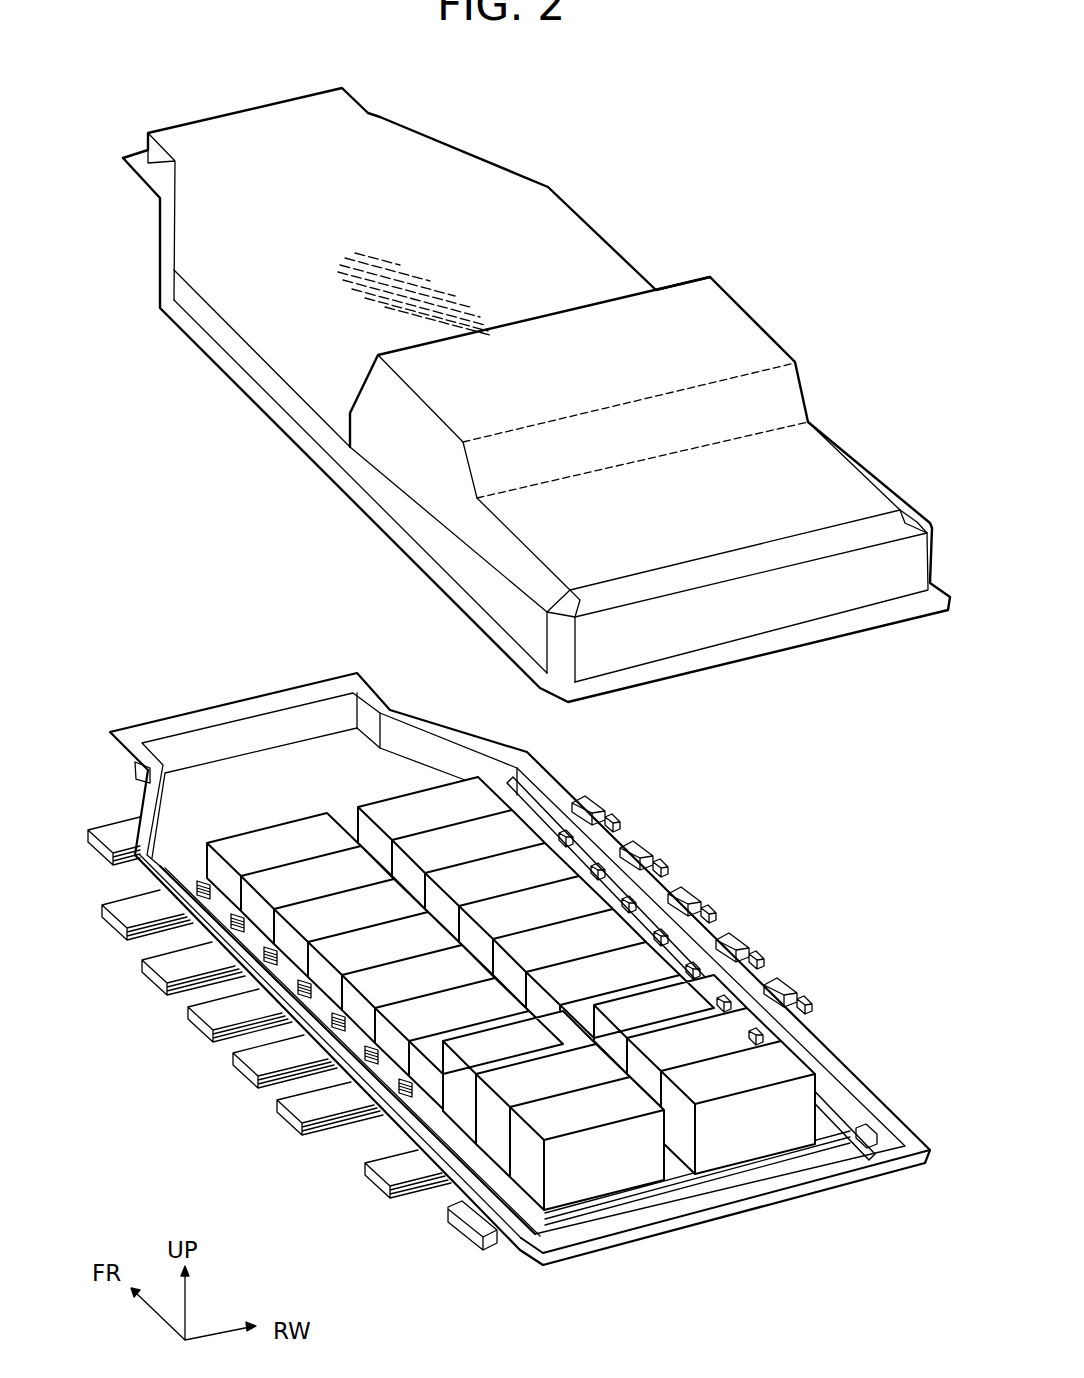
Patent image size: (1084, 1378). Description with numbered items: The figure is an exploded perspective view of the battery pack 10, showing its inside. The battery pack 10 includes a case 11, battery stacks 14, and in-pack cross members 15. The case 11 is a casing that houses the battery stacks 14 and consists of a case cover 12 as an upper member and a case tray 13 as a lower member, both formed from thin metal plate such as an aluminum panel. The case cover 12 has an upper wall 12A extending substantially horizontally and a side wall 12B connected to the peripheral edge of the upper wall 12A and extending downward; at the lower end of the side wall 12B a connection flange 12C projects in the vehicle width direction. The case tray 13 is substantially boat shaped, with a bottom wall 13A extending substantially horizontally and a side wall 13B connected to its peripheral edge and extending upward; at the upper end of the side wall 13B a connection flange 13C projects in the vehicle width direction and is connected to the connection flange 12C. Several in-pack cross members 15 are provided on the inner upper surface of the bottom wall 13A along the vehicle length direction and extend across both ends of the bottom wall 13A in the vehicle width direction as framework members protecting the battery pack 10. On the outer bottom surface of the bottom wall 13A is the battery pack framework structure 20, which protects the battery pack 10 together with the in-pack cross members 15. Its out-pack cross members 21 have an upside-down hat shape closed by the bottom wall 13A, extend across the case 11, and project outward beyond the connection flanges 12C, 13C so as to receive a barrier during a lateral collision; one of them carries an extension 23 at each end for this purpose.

The battery pack 10 is at (214, 551).
The case 11 is at (497, 659).
The case cover 12 is at (450, 140).
The upper wall 12A is at (212, 135).
The side wall 12B is at (200, 313).
The connection flange 12C is at (140, 150).
The case tray 13 is at (180, 712).
The bottom wall 13A is at (263, 782).
The side wall 13B is at (403, 740).
The connection flange 13C is at (308, 692).
The battery stacks 14 is at (743, 1003).
The in-pack cross members 15 is at (713, 1187).
The battery pack framework structure 20 is at (247, 1200).
The out-pack cross members 21 is at (240, 1083).
The extension 23 is at (452, 1232).